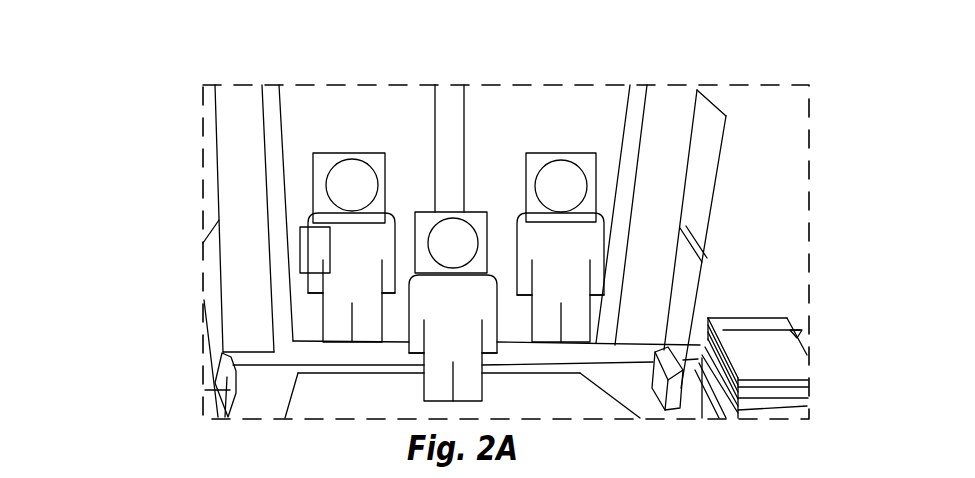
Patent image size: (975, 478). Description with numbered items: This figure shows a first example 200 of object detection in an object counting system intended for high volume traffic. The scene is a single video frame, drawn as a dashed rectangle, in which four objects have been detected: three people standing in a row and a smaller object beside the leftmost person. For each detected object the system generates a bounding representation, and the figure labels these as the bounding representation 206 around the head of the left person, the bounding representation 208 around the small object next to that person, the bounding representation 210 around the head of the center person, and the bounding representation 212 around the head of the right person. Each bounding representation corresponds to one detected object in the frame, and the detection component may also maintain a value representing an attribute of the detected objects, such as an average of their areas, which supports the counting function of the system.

The example of object detection 200 is at (154, 112).
The bounding representation 206 is at (313, 178).
The bounding representation 208 is at (300, 251).
The bounding representation 210 is at (453, 212).
The bounding representation 212 is at (596, 160).